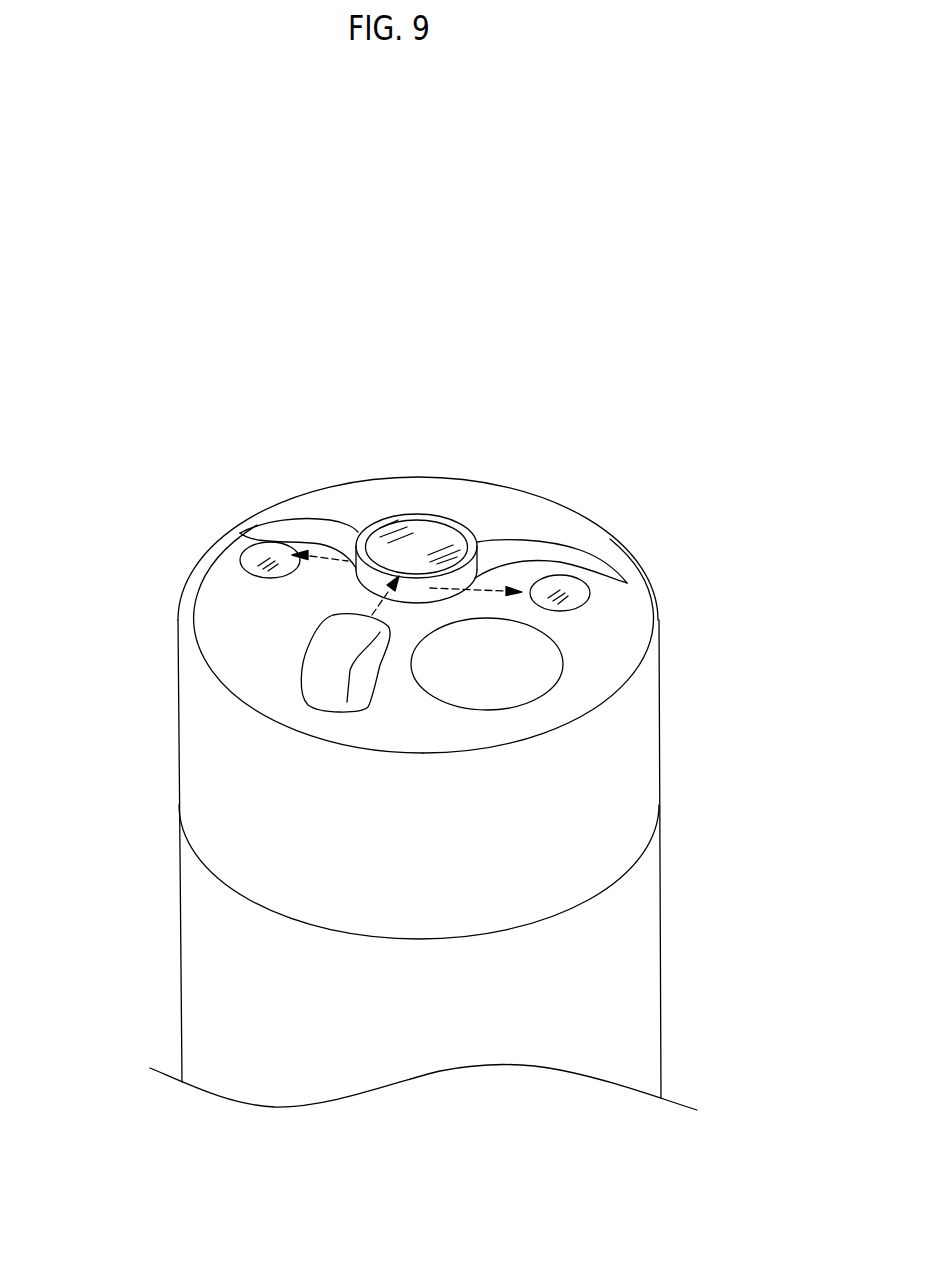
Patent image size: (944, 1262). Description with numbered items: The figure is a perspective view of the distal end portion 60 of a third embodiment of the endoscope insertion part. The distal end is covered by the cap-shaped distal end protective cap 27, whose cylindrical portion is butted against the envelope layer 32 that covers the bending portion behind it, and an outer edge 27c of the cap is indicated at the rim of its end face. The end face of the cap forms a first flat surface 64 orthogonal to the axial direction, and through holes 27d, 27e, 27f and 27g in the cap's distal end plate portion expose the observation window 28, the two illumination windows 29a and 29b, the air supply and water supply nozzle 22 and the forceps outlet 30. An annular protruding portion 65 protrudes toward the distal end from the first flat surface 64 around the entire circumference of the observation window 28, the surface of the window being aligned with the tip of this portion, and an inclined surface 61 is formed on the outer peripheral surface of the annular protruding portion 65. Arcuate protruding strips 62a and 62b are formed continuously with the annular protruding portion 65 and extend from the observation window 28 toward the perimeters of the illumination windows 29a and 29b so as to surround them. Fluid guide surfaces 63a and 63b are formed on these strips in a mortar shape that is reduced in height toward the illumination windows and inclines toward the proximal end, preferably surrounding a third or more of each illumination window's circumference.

The distal end portion 60 is at (533, 273).
The distal end protective cap 27 is at (633, 772).
The envelope layer 32 is at (643, 983).
The housing top outer edge 27c is at (660, 596).
The air supply and water supply nozzle 22 is at (320, 663).
The first flat surface 64 is at (260, 685).
The annular protruding portion 65 is at (400, 508).
The through hole 27d is at (462, 533).
The observation window 28 is at (425, 542).
The inclined surface 61 is at (382, 578).
The fluid guide surface 63a is at (327, 535).
The fluid guide surface 63b is at (527, 550).
The arcuate protruding strip 62a is at (280, 517).
The arcuate protruding strip 62b is at (558, 541).
The illumination window 29a is at (268, 545).
The through hole 27e is at (270, 578).
The illumination window 29b is at (574, 578).
The through hole 27f is at (563, 608).
The through hole 27g is at (345, 712).
The forceps outlet 30 is at (497, 698).